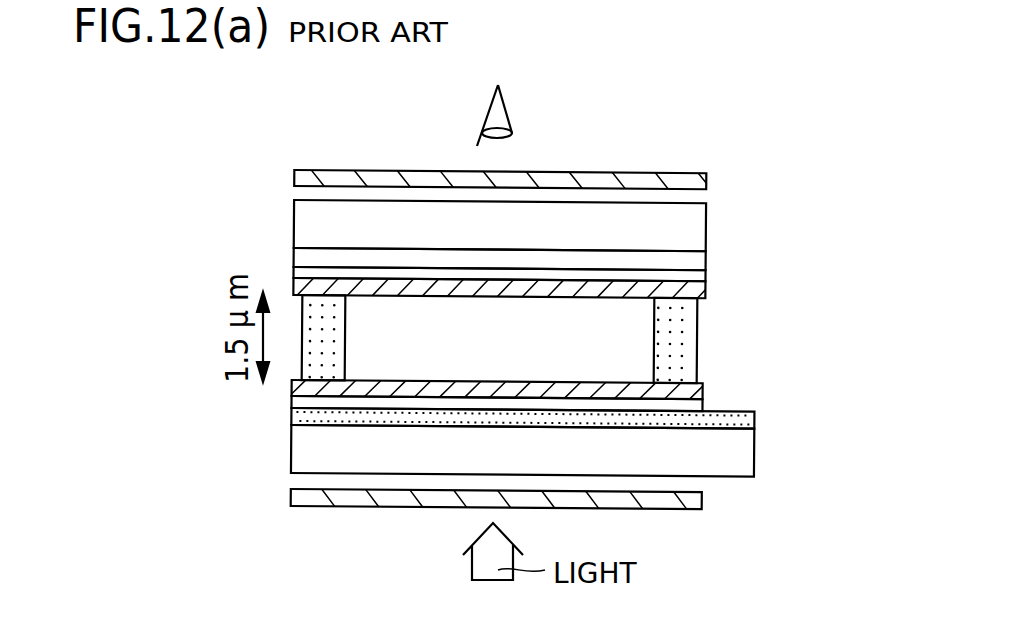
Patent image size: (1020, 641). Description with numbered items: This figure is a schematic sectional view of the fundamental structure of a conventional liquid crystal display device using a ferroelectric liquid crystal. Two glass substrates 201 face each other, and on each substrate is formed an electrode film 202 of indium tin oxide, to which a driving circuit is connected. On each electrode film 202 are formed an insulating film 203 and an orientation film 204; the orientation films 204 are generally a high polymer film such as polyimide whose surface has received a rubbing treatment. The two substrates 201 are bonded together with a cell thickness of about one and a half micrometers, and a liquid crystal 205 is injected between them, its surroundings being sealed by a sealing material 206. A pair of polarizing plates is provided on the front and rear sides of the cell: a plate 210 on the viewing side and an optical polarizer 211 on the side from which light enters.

The upper polarizing plate 210 is at (582, 167).
The glass substrate 201 is at (695, 223).
The electrode film 202 is at (695, 260).
The insulating film 203 is at (698, 277).
The orientation film 204 is at (698, 288).
The liquid crystal 205 is at (620, 352).
The sealing material 206 is at (693, 333).
The optical polarizer 211 is at (713, 505).